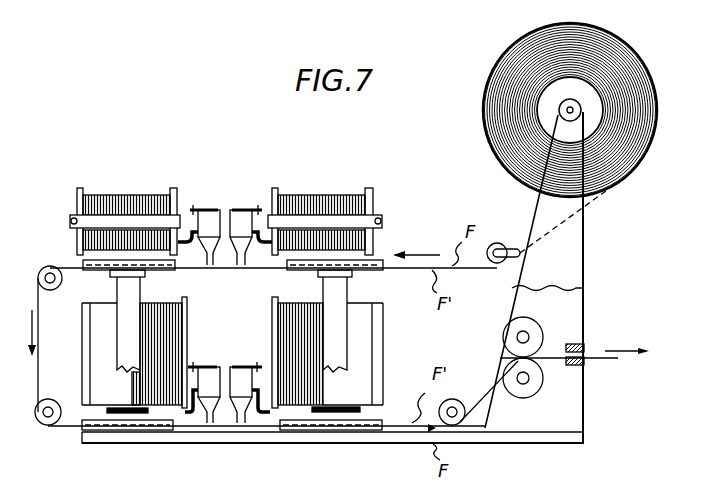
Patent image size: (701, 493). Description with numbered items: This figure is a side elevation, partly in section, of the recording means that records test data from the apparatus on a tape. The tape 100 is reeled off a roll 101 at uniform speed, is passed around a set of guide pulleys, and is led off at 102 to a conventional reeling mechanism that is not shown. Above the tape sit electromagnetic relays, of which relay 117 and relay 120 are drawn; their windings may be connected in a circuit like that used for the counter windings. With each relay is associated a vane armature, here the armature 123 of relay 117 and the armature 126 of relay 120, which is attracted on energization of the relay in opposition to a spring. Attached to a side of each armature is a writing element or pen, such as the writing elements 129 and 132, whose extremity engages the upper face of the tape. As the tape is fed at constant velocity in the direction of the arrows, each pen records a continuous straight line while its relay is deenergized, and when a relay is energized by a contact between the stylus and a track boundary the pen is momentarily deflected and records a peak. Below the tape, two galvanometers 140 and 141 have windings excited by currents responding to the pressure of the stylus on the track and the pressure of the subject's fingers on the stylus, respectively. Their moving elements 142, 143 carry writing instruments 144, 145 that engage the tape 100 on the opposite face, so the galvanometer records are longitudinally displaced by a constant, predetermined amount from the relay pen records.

The tape 100 is at (395, 433).
The roll 101 is at (490, 90).
The lead-off point 102 is at (610, 360).
The electromagnetic relay 117 is at (97, 190).
The vane armature 123 is at (122, 222).
The writing element 129 is at (209, 207).
The writing element 132 is at (240, 207).
The vane armature 126 is at (322, 222).
The electromagnetic relay 120 is at (352, 199).
The galvanometer 140 is at (167, 327).
The galvanometer 141 is at (295, 324).
The moving element 142 is at (130, 415).
The moving element 143 is at (340, 412).
The writing instrument 144 is at (198, 427).
The writing instrument 145 is at (247, 427).